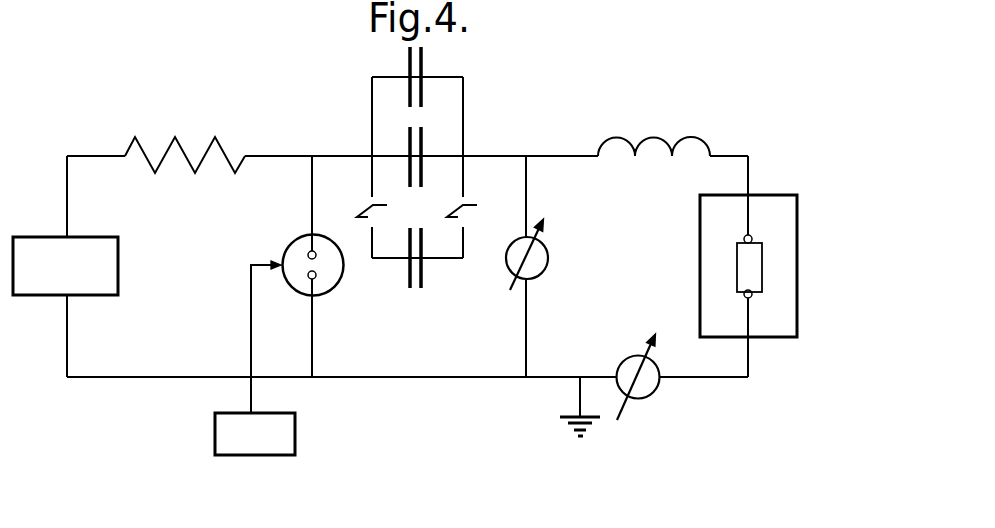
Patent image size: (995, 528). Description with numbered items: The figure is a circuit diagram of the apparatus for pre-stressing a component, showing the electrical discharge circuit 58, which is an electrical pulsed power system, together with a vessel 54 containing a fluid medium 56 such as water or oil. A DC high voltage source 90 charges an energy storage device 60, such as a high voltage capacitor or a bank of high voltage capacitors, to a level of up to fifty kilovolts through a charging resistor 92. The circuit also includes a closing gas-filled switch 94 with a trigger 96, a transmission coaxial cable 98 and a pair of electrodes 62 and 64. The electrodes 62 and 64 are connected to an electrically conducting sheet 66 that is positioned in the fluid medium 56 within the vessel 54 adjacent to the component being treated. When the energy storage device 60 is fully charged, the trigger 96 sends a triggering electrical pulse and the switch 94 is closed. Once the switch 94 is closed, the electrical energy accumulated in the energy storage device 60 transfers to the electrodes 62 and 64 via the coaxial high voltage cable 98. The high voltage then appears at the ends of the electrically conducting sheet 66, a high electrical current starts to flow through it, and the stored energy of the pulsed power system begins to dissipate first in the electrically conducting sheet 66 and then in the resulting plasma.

The vessel 54 is at (700, 237).
The fluid medium 56 is at (718, 287).
The electrical discharge circuit 58 is at (368, 94).
The energy storage device 60 is at (476, 89).
The electrode 62 is at (752, 236).
The electrode 64 is at (745, 298).
The electrically conducting sheet 66 is at (766, 267).
The DC high voltage source 90 is at (118, 262).
The charging resistor 92 is at (196, 140).
The closing gas-filled switch 94 is at (337, 284).
The trigger 96 is at (258, 441).
The transmission coaxial cable 98 is at (696, 122).